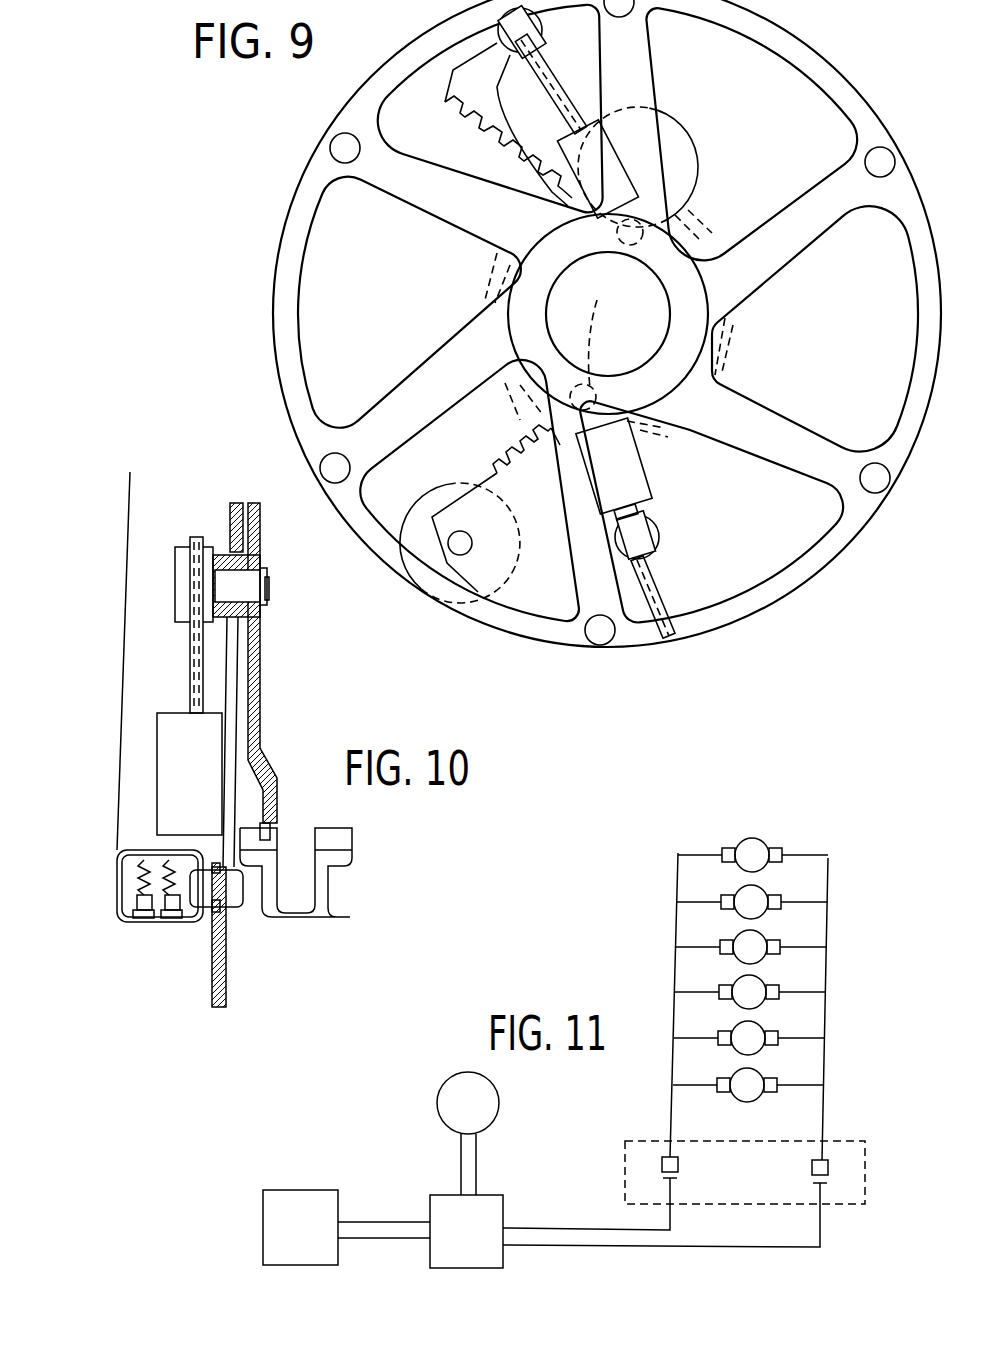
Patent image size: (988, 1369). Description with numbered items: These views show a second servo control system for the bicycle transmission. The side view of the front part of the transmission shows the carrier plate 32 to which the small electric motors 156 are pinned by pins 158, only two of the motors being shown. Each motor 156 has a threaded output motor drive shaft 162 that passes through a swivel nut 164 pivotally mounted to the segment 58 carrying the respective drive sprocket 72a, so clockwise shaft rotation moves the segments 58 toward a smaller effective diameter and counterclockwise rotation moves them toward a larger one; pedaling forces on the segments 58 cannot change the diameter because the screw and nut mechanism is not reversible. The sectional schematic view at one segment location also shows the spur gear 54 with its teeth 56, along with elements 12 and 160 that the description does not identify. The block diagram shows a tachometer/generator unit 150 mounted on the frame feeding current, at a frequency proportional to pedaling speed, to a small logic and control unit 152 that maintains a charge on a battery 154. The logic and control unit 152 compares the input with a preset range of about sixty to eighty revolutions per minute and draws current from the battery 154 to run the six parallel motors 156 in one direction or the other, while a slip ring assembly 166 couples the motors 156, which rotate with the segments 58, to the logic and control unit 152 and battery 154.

In FIG. 10, the frame panel 12 is at (126, 632).
In FIG. 9, the carrier plate 32 is at (397, 566).
In FIG. 10, the spur gear 54 is at (340, 915).
In FIG. 10, the teeth 56 is at (327, 830).
In FIG. 9, the segment 58 is at (505, 452).
In FIG. 9, the drive sprocket 72a is at (680, 175).
In FIG. 11, the tachometer/generator unit 150 is at (490, 1092).
In FIG. 11, the logic and control unit 152 is at (495, 1195).
In FIG. 11, the battery 154 is at (305, 1190).
In FIG. 9, the electric motor 156 is at (598, 153).
In FIG. 10, the electric motor 156 is at (157, 768).
In FIG. 11, the electric motor 156 is at (725, 945).
In FIG. 9, the pin 158 is at (627, 244).
In FIG. 10, the pin 158 is at (230, 512).
In FIG. 10, the mounting plate 160 is at (262, 718).
In FIG. 9, the motor drive shaft 162 is at (562, 92).
In FIG. 10, the motor drive shaft 162 is at (190, 665).
In FIG. 9, the swivel nut 164 is at (640, 538).
In FIG. 10, the swivel nut 164 is at (178, 550).
In FIG. 10, the slip ring assembly 166 is at (140, 925).
In FIG. 11, the slip ring assembly 166 is at (866, 1150).